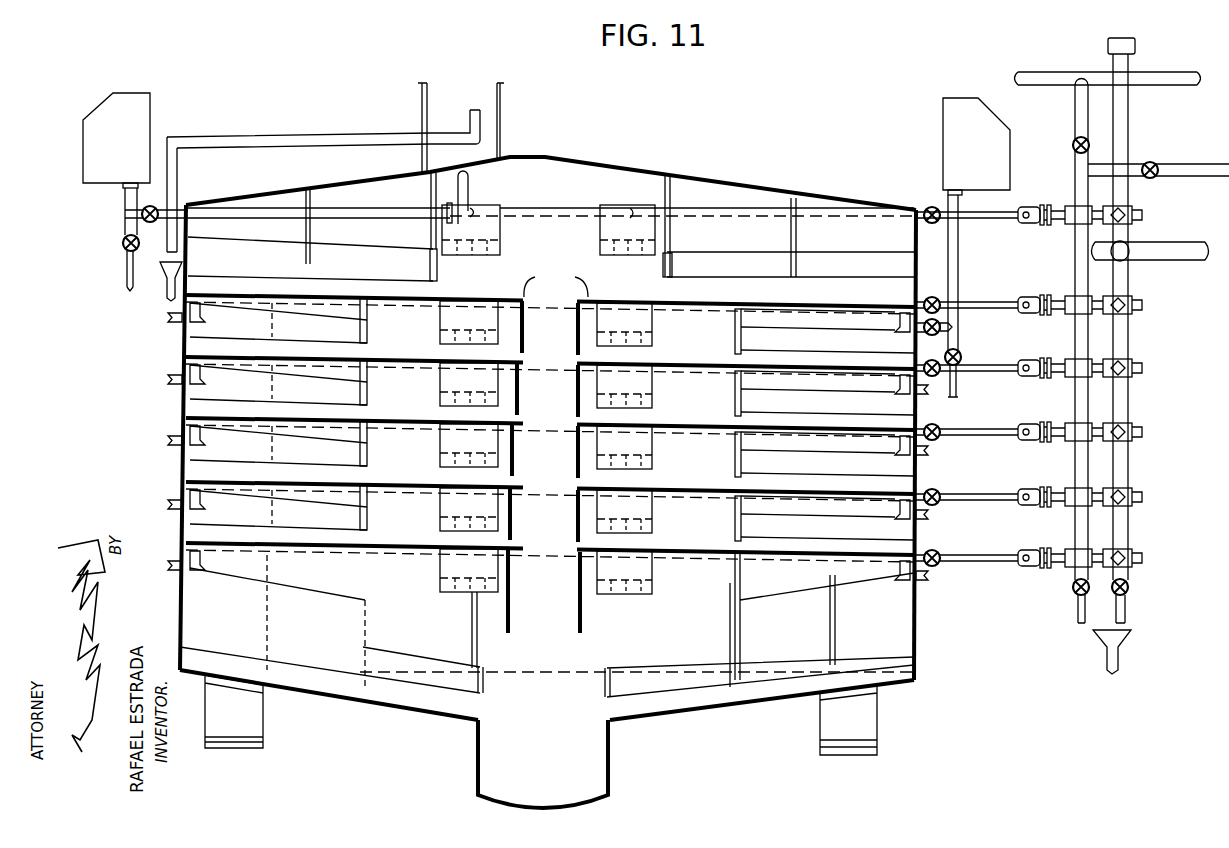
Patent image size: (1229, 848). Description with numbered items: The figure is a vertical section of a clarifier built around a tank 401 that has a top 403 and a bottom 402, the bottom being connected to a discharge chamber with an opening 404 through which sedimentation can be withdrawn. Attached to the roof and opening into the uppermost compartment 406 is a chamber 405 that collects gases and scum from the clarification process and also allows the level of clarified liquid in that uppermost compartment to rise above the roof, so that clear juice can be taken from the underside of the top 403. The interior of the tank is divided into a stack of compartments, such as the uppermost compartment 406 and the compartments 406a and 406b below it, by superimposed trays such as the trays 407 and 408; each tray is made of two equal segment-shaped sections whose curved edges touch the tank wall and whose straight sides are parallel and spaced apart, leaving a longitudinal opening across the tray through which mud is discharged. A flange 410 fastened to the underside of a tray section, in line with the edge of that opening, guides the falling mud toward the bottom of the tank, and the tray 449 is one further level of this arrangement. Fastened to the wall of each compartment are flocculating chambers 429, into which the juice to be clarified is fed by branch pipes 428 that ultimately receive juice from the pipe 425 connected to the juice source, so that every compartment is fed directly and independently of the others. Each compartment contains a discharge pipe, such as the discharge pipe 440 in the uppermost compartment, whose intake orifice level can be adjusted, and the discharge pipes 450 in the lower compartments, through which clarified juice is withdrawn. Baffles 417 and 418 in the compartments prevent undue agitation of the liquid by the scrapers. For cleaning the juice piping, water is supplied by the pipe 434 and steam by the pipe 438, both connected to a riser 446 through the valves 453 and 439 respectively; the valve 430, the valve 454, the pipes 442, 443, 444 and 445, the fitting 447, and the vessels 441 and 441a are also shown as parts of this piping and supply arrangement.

The tank 401 is at (180, 401).
The bottom 402 is at (323, 700).
The top 403 is at (703, 172).
The opening 404 is at (535, 803).
The chamber 405 is at (500, 100).
The uppermost compartment 406 is at (572, 261).
The compartment 406a is at (435, 344).
The second tray compartment 406b is at (435, 401).
The tray 407 is at (556, 281).
The tray 408 is at (522, 342).
The flange 410 is at (580, 336).
The baffle 417 is at (742, 237).
The baffle 418 is at (740, 338).
The pipe 425 is at (1160, 244).
The branch pipe 428 is at (978, 220).
The flocculating chamber 429 is at (456, 248).
The valve 430 is at (930, 207).
The pipe 434 is at (1096, 72).
The pipe 438 is at (1222, 150).
The valve 439 is at (1160, 175).
The discharge pipe 440 is at (392, 212).
The supply tank 441 is at (152, 117).
The supply tank 441a is at (945, 134).
The riser pipe 442 is at (468, 190).
The overflow pipe 443 is at (262, 137).
The pipe end 444 is at (482, 122).
The vertical manifold 445 is at (1128, 110).
The riser 446 is at (1075, 118).
The nozzle 447 is at (634, 208).
The tray 449 is at (906, 298).
The discharge pipe 450 is at (170, 318).
The valve 453 is at (1073, 143).
The valve 454 is at (907, 358).